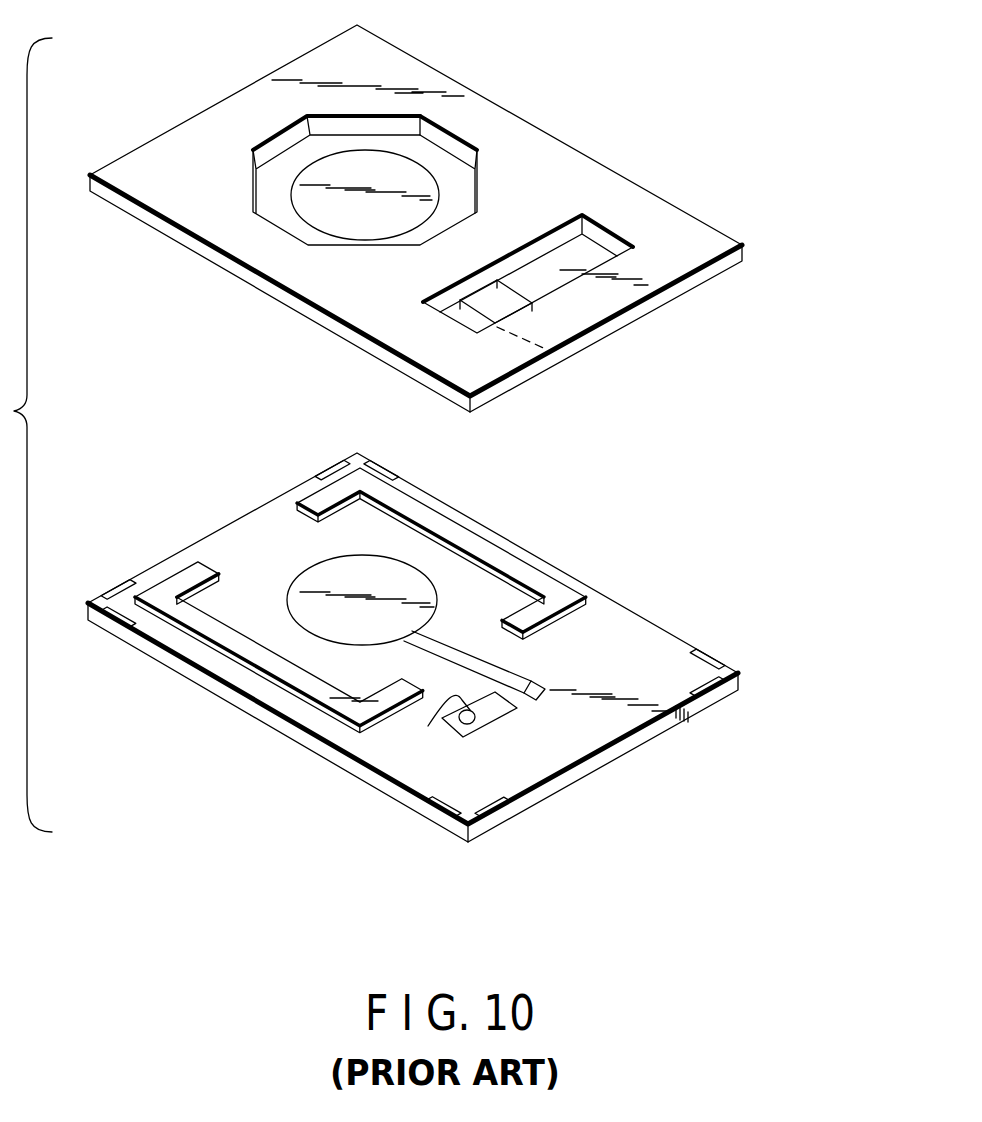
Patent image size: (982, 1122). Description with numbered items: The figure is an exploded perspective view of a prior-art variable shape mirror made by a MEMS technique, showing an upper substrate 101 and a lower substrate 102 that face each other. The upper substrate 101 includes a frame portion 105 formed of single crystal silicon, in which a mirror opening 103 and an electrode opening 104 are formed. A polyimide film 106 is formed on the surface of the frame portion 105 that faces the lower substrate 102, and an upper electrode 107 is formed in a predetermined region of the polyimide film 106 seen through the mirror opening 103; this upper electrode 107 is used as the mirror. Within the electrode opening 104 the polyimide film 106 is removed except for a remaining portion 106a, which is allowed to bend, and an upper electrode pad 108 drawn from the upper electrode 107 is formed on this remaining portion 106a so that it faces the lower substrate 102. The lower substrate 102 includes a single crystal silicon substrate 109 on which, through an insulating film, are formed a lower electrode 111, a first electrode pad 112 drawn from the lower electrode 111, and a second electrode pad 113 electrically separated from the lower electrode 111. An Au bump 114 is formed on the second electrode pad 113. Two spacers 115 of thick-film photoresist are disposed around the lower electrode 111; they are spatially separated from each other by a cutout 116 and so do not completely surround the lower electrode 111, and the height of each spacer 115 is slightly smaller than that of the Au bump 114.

The upper substrate 101 is at (752, 252).
The lower substrate 102 is at (750, 680).
The mirror opening 103 is at (446, 139).
The electrode opening 104 is at (603, 232).
The frame portion 105 is at (543, 162).
The polyimide film 106 is at (273, 183).
The remaining portion 106a is at (490, 303).
The upper electrode 107 is at (320, 210).
The upper electrode pad 108 is at (556, 350).
The single crystal silicon substrate 109 is at (647, 737).
The lower electrode 111 is at (320, 622).
The first electrode pad 112 is at (537, 683).
The second electrode pad 113 is at (490, 707).
The Au bump 114 is at (437, 727).
The spacers 115 is at (553, 592).
The cutout 116 is at (267, 522).